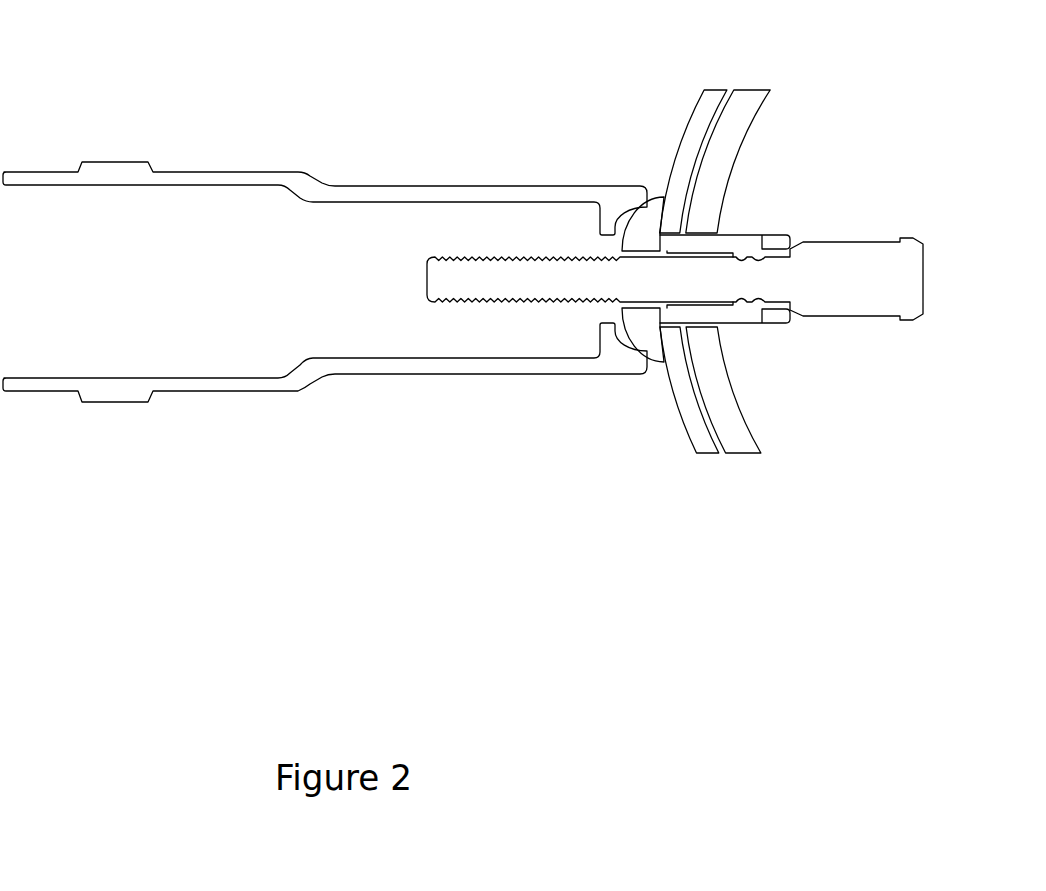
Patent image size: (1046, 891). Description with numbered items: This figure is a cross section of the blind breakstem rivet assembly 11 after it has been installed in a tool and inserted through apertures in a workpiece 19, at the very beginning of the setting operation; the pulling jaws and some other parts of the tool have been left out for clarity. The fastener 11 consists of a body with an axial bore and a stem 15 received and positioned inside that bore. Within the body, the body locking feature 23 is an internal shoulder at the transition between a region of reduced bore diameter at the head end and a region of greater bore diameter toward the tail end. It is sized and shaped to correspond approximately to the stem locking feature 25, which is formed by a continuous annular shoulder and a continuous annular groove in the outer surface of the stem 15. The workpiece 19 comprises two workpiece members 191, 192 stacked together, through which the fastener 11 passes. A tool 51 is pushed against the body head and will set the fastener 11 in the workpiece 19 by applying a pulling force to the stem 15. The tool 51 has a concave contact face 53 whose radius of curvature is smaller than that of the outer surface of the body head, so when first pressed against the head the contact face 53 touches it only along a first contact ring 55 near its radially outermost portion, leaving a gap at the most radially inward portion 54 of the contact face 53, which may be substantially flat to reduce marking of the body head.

The blind breakstem rivet assembly 11 is at (890, 375).
The stem 15 is at (508, 257).
The workpiece 19 is at (755, 280).
The workpiece member 191 is at (703, 457).
The workpiece member 192 is at (747, 457).
The body locking feature 23 is at (710, 247).
The stem locking feature 25 is at (763, 247).
The tool 51 is at (237, 392).
The contact face 53 is at (624, 350).
The most radially inward portion 54 is at (612, 324).
The first contact ring 55 is at (644, 357).